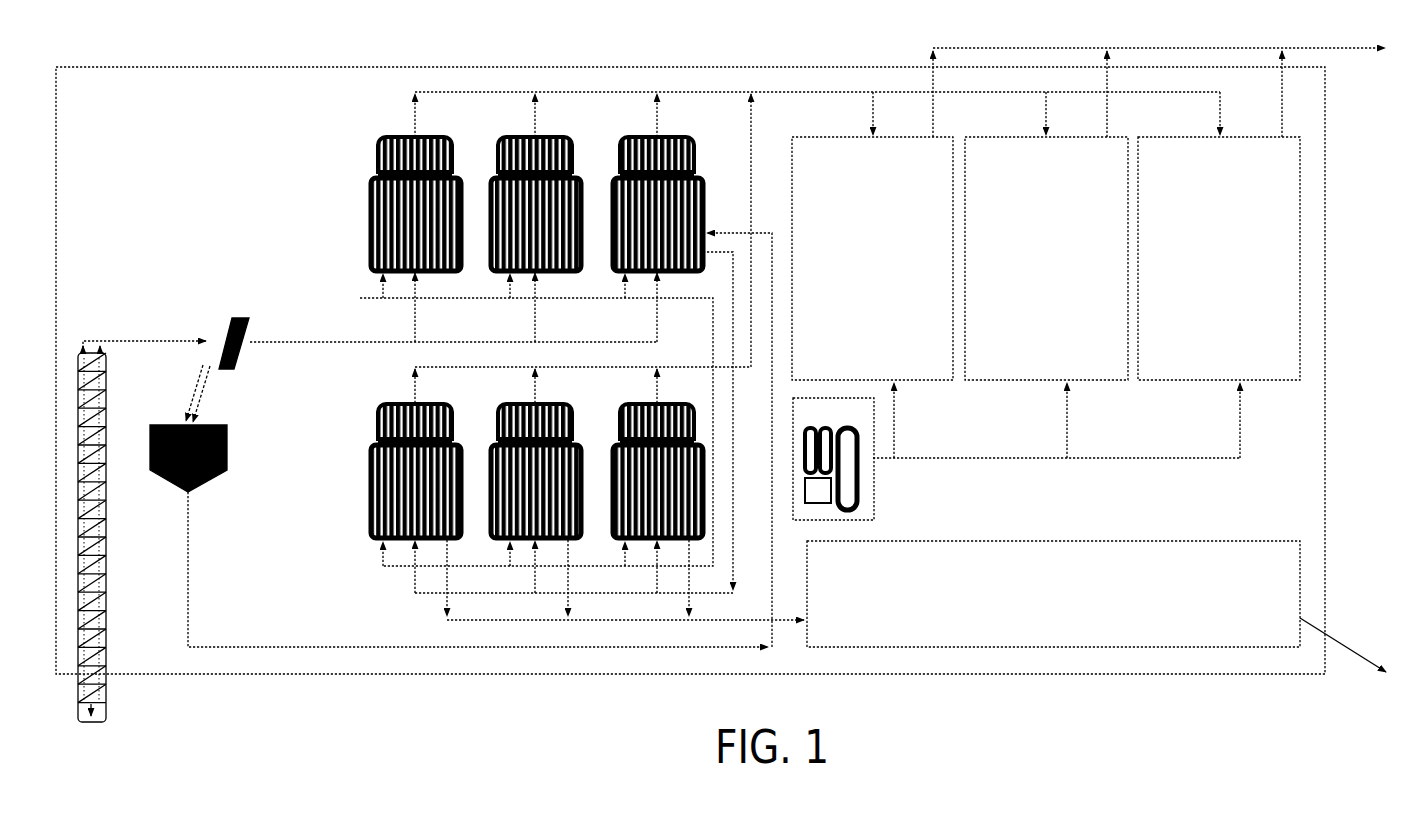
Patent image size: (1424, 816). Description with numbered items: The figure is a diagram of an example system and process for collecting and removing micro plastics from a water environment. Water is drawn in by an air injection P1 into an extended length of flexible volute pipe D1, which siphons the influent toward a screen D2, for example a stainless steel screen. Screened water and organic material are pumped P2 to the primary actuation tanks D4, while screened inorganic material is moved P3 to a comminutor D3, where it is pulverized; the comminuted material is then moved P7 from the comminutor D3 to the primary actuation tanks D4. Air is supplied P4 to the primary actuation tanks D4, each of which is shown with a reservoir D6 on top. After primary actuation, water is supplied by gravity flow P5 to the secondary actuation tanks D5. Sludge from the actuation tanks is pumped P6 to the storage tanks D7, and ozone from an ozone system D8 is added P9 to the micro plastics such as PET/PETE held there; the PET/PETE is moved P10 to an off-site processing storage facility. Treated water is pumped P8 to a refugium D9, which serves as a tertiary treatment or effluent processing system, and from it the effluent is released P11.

The flexible volute pipe D1 is at (109, 537).
The screen D2 is at (234, 334).
The comminutor D3 is at (202, 458).
The primary actuation tank D4 is at (523, 224).
The secondary actuation tank D5 is at (522, 491).
The reservoir D6 is at (523, 291).
The storage tank D7 is at (1046, 258).
The ozone system D8 is at (833, 459).
The refugium D9 is at (1053, 594).
The air injection P1 is at (144, 520).
The pumping of screened water and organic material P2 is at (453, 307).
The movement of screened inorganic material P3 is at (208, 393).
The air supply P4 is at (523, 420).
The gravity flow to secondary actuation P5 is at (561, 422).
The sludge pumping P6 is at (817, 240).
The movement of comminuted material P7 is at (480, 436).
The treated water pumping P8 is at (612, 580).
The ozone addition P9 is at (1074, 420).
The PET/PETE removal P10 is at (1178, 89).
The effluent release P11 is at (1343, 645).